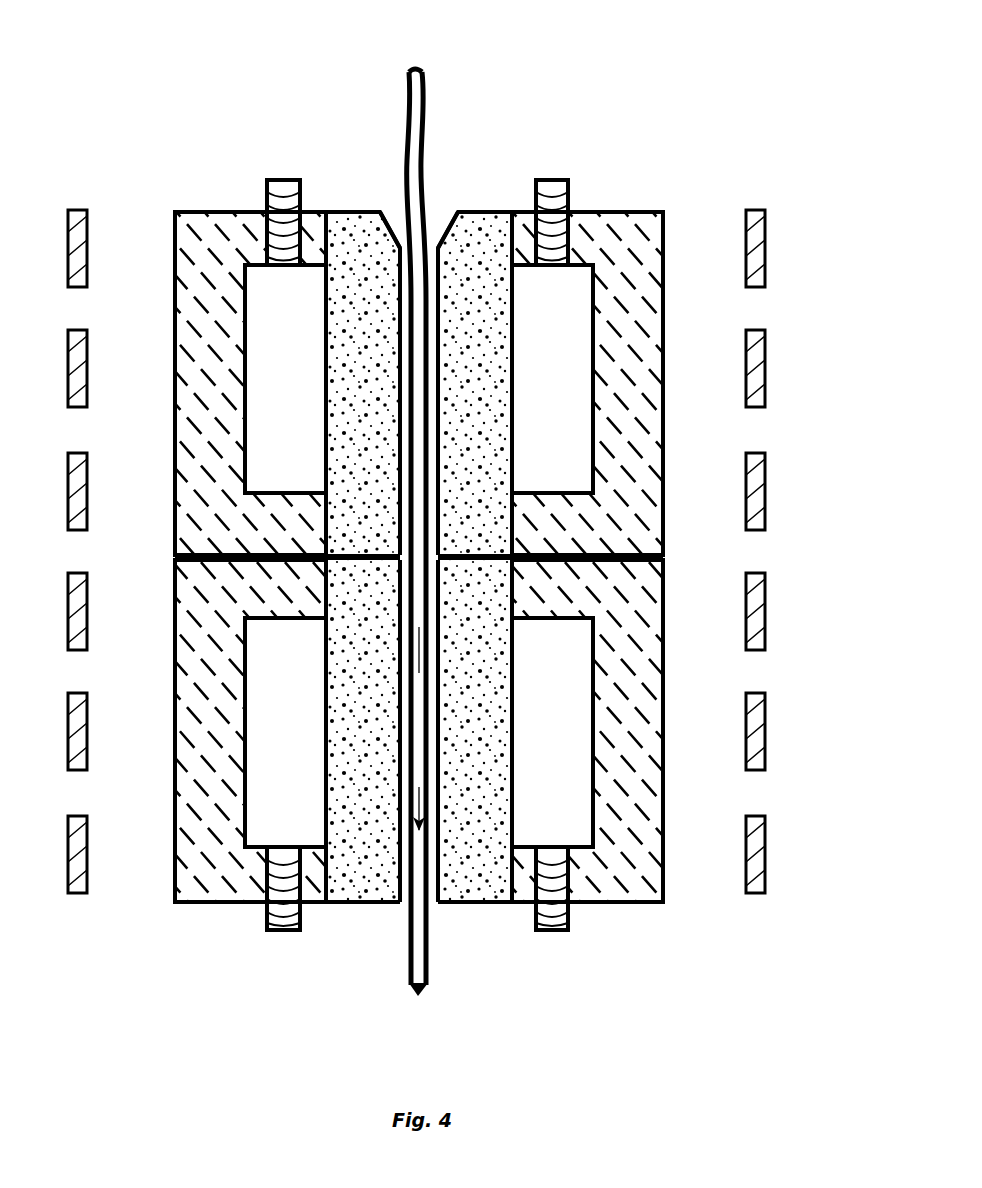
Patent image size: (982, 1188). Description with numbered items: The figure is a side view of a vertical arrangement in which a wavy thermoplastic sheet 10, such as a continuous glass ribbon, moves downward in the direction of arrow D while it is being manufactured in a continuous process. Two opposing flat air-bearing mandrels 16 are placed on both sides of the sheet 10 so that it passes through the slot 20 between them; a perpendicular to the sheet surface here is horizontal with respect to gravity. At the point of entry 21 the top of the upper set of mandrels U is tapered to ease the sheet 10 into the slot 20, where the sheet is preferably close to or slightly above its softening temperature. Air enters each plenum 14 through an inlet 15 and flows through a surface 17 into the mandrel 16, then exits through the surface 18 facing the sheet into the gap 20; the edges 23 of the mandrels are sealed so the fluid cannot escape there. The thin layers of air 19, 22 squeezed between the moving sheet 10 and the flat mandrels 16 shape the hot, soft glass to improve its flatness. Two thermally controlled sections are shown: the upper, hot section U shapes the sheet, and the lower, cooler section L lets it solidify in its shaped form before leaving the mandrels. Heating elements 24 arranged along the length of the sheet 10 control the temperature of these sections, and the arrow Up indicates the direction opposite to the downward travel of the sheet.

The sheet 10 is at (422, 74).
The plenum 14 is at (275, 370).
The inlet 15 is at (268, 182).
The mandrel 16 is at (348, 345).
The surface 17 is at (316, 298).
The surface 18 is at (404, 470).
The thin layer of air 19 is at (398, 212).
The slot 20 is at (404, 372).
The point of entry 21 is at (396, 213).
The thin layer of air 22 is at (437, 240).
The edge 23 is at (362, 208).
The heating element 24 is at (85, 197).
The upper set of mandrels U is at (674, 166).
The upward pressure direction Up is at (816, 277).
The lower section L is at (675, 950).
The direction of movement D is at (415, 996).